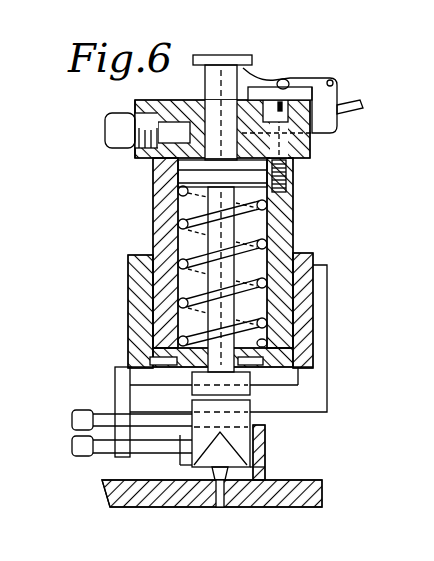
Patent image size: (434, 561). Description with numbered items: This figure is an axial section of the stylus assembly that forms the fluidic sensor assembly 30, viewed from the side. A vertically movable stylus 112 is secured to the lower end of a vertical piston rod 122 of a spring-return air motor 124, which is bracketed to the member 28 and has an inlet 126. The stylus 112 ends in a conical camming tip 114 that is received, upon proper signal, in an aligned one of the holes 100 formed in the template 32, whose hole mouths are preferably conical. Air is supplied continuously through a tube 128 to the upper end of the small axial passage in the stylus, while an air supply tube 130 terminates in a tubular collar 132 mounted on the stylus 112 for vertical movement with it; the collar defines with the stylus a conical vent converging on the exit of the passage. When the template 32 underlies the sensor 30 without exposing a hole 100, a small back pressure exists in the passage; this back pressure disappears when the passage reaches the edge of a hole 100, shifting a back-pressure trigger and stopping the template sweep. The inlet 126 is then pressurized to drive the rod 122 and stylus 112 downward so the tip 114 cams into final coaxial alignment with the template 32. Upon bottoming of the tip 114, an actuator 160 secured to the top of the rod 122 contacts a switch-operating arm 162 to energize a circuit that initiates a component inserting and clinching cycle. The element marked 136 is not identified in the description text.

The fluidic sensor assembly 30 is at (352, 313).
The actuator 160 is at (200, 55).
The switch-operating arm 162 is at (263, 70).
The inlet 126 is at (125, 112).
The piston rod 122 is at (282, 222).
The spring-return air motor 124 is at (288, 177).
The member 28 is at (327, 380).
The tube 128 is at (106, 412).
The air supply tube 130 is at (98, 457).
The stylus 112 is at (252, 392).
The tubular collar 132 is at (253, 420).
The sleeve 136 is at (262, 450).
The conical camming tip 114 is at (266, 473).
The template 32 is at (241, 512).
The holes 100 is at (220, 505).